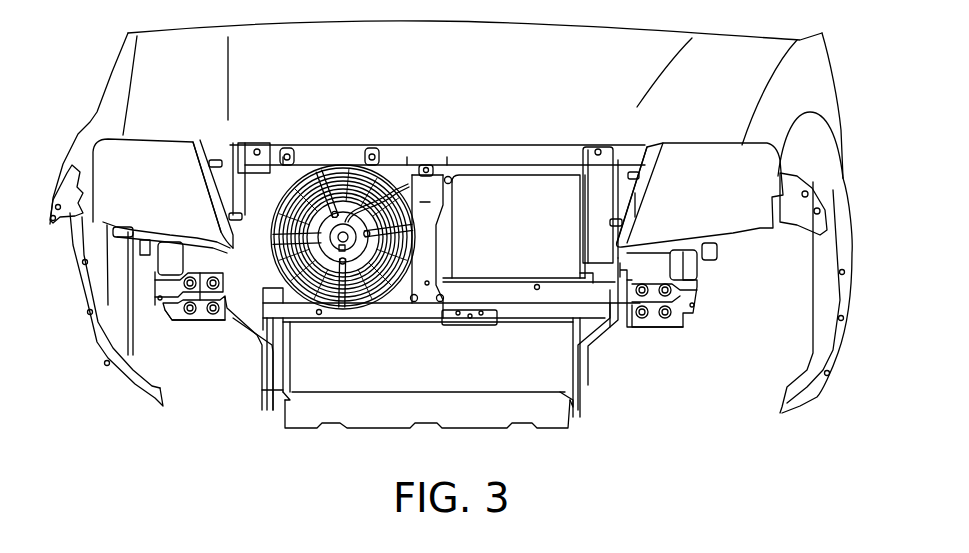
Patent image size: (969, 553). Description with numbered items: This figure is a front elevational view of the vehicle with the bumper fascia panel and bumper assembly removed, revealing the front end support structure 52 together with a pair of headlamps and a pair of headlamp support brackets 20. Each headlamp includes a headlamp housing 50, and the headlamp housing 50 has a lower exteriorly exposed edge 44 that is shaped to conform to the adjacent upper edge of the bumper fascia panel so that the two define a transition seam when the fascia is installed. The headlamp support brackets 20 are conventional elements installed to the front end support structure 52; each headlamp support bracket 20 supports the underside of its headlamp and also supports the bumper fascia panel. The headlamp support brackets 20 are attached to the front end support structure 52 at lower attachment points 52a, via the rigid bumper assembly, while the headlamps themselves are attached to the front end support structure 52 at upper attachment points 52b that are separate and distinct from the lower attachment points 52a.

The headlamp support bracket 20 is at (168, 258).
The lower exteriorly exposed edge 44 is at (202, 273).
The headlamp housing 50 is at (207, 207).
The front end support structure 52 is at (178, 315).
The lower attachment points 52a is at (155, 290).
The upper attachment points 52b is at (215, 160).